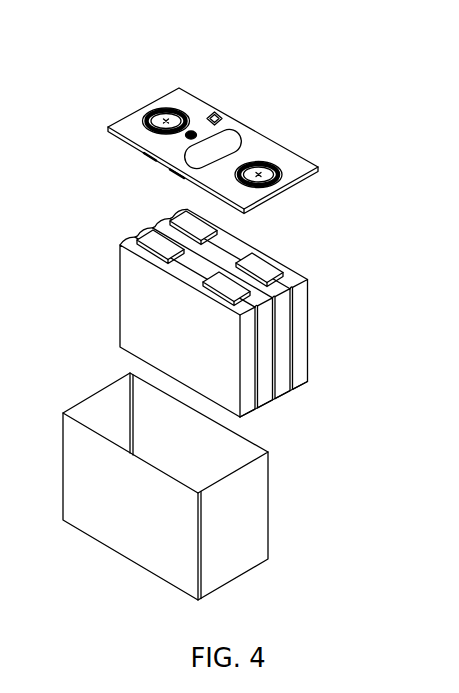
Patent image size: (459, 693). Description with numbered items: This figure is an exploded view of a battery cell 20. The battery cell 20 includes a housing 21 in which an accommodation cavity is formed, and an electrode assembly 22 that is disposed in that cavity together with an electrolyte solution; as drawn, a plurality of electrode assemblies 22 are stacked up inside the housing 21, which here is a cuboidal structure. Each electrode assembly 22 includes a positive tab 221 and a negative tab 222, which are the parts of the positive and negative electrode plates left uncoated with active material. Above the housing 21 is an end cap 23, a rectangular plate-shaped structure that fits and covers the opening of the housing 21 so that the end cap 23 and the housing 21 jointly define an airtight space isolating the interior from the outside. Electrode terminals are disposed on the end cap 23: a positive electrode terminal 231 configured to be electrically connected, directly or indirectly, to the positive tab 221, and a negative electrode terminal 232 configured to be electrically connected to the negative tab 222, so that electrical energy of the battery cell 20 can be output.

The battery cell 20 is at (56, 59).
The housing 21 is at (245, 452).
The electrode assembly 22 is at (251, 304).
The positive tab 221 is at (273, 262).
The negative tab 222 is at (171, 224).
The end cap 23 is at (247, 127).
The positive electrode terminal 231 is at (280, 158).
The negative electrode terminal 232 is at (144, 108).